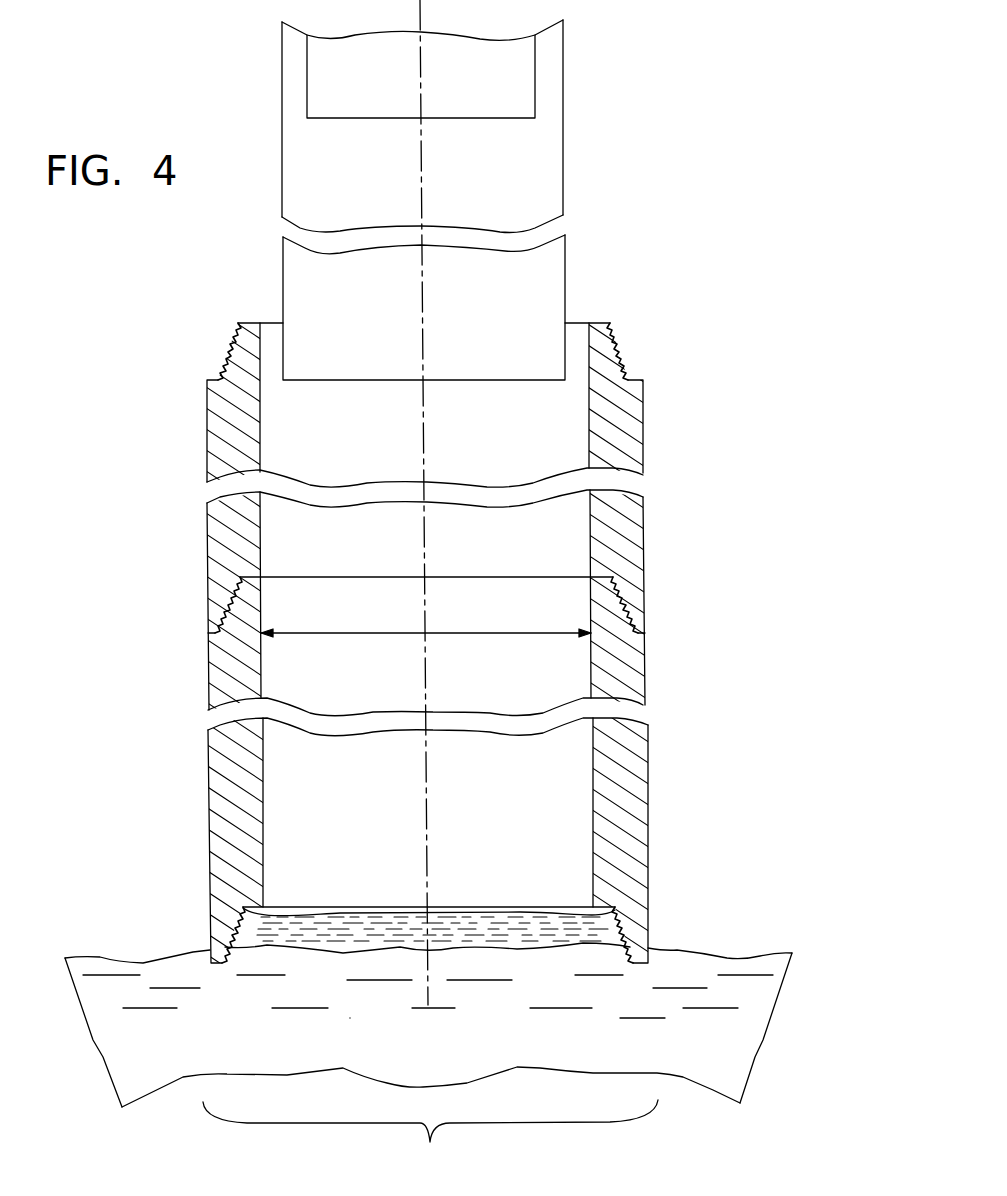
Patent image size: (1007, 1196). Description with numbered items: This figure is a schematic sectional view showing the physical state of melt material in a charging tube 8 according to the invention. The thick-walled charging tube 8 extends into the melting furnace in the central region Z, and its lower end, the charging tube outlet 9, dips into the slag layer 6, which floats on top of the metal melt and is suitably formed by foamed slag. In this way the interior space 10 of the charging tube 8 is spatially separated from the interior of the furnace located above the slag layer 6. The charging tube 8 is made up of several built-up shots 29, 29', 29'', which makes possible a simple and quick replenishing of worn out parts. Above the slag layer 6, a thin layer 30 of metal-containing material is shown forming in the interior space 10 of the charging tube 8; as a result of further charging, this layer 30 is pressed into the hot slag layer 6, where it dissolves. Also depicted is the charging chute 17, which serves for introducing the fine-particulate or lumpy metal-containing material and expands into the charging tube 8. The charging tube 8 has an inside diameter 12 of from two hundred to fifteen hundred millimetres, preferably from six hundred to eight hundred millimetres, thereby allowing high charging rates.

The charging chute 17 is at (520, 305).
The charging tube 8 is at (233, 560).
The built-up shot 29'' is at (686, 392).
The built-up shot 29' is at (708, 597).
The built-up shot 29 is at (719, 840).
The inside diameter 12 is at (426, 619).
The interior space of the charging tube 10 is at (548, 812).
The charging tube outlet 9 is at (220, 925).
The thin layer of metal-containing material 30 is at (390, 933).
The slag layer 6 is at (488, 1042).
The central region Z is at (430, 1140).